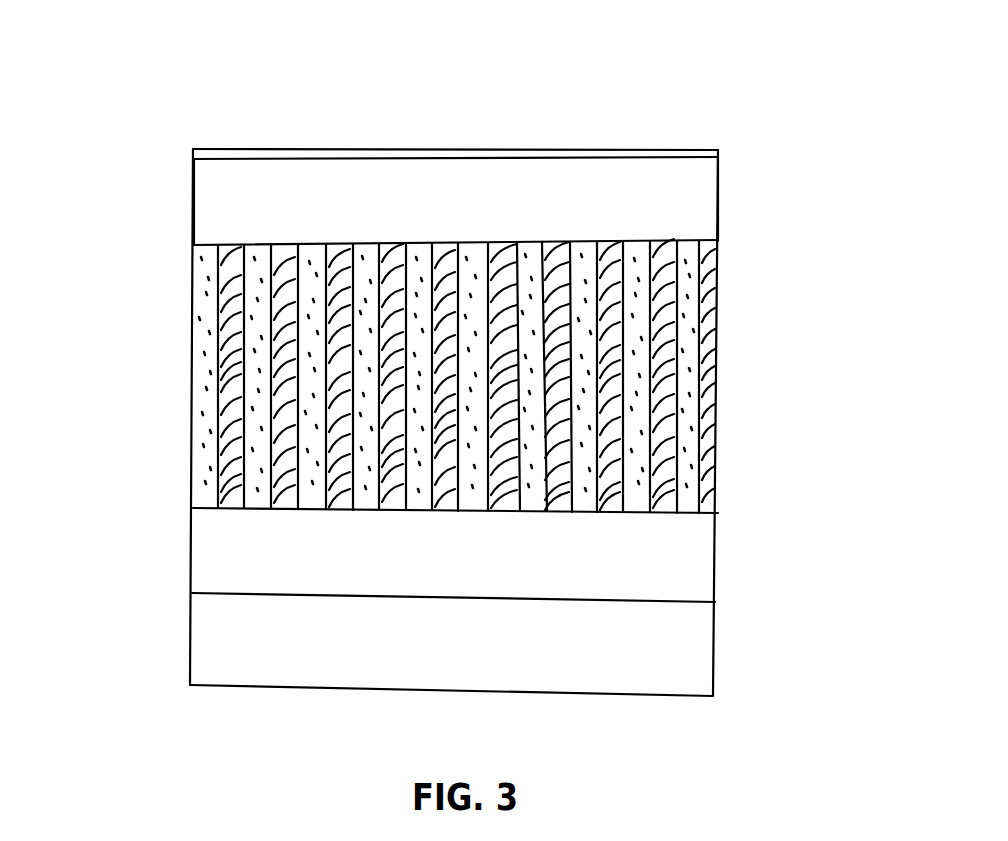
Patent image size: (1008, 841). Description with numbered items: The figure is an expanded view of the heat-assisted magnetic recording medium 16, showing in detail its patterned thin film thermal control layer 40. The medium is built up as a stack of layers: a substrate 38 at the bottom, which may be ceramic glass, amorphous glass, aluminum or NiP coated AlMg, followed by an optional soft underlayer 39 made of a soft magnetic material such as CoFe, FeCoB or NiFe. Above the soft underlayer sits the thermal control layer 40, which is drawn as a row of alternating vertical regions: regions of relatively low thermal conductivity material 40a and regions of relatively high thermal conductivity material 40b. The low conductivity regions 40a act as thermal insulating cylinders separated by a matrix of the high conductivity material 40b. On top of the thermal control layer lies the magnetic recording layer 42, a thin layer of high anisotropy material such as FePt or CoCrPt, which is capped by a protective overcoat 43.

The heat-assisted magnetic recording medium 16 is at (139, 102).
The substrate 38 is at (697, 658).
The soft underlayer 39 is at (697, 573).
The patterned thin film thermal control layer 40 is at (505, 282).
The low thermal conductivity regions 40a is at (446, 272).
The high thermal conductivity regions 40b is at (337, 250).
The magnetic recording layer 42 is at (712, 198).
The protective overcoat 43 is at (715, 153).